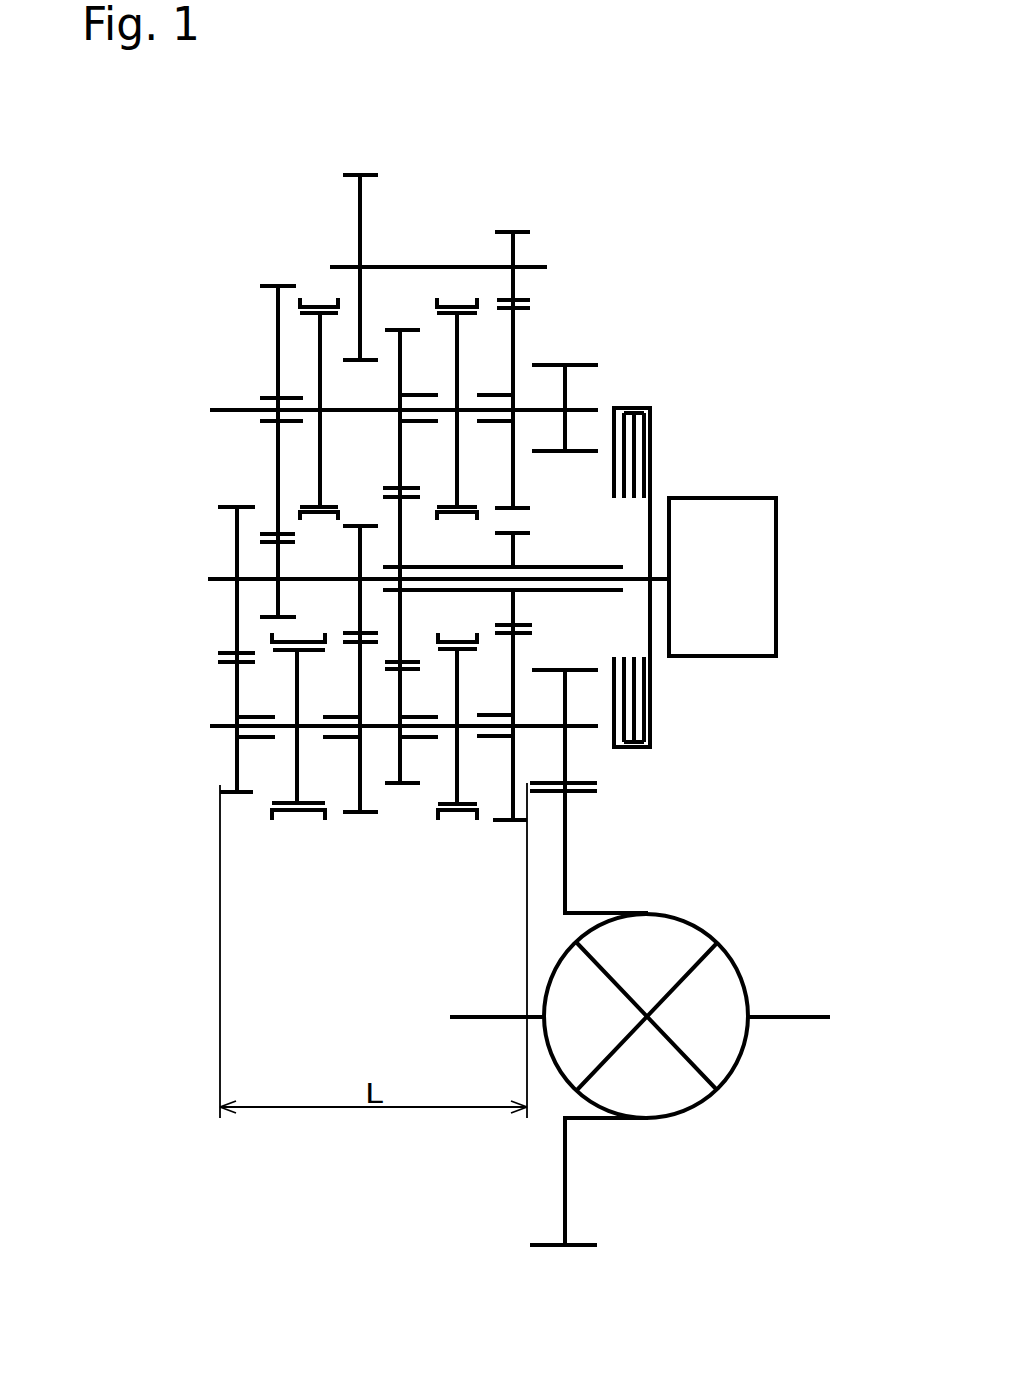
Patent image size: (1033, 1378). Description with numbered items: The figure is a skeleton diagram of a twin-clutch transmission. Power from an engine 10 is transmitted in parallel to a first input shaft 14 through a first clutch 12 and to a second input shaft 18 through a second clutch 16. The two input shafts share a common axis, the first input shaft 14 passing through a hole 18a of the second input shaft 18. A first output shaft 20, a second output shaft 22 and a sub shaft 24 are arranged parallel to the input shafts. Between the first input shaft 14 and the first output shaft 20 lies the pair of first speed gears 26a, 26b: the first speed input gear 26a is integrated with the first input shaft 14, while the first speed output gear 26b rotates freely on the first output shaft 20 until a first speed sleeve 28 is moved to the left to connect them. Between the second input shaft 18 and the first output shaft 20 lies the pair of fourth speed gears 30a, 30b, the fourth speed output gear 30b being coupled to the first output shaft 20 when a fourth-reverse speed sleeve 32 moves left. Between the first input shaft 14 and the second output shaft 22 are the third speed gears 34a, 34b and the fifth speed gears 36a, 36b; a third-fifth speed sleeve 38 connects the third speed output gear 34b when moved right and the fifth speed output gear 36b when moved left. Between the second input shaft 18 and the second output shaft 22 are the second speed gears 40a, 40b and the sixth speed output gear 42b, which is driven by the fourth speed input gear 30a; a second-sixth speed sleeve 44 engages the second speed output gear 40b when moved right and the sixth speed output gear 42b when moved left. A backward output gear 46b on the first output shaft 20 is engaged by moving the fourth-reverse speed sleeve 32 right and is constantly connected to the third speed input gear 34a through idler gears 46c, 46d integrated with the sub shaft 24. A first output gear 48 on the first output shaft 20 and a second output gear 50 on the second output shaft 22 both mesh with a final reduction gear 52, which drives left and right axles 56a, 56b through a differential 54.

The engine 10 is at (720, 497).
The first clutch 12 is at (645, 405).
The first input shaft 14 is at (213, 582).
The second clutch 16 is at (618, 405).
The second input shaft 18 is at (560, 590).
The hole 18a is at (667, 582).
The first output shaft 20 is at (208, 410).
The second output shaft 22 is at (212, 730).
The sub shaft 24 is at (423, 267).
The first speed input gear 26a is at (280, 597).
The first speed output gear 26b is at (277, 333).
The first speed sleeve 28 is at (307, 300).
The fourth speed input gear 30a is at (405, 540).
The fourth speed output gear 30b is at (398, 350).
The 4-R speed sleeve 32 is at (457, 317).
The third speed input gear 34a is at (360, 603).
The third speed output gear 34b is at (360, 782).
The fifth speed input gear 36a is at (233, 633).
The fifth speed output gear 36b is at (250, 778).
The 3-5 speed sleeve 38 is at (298, 818).
The second speed input gear 40a is at (513, 552).
The second speed output gear 40b is at (507, 790).
The sixth speed output gear 42b is at (407, 767).
The 2-6 speed sleeve 44 is at (462, 815).
The backward output gear 46b is at (517, 340).
The idler gear 46c is at (358, 217).
The idler gear 46d is at (517, 245).
The first output gear 48 is at (563, 380).
The second output gear 50 is at (568, 760).
The final reduction gear 52 is at (568, 823).
The differential 54 is at (672, 935).
The axle 56a is at (487, 1013).
The axle 56b is at (795, 1010).